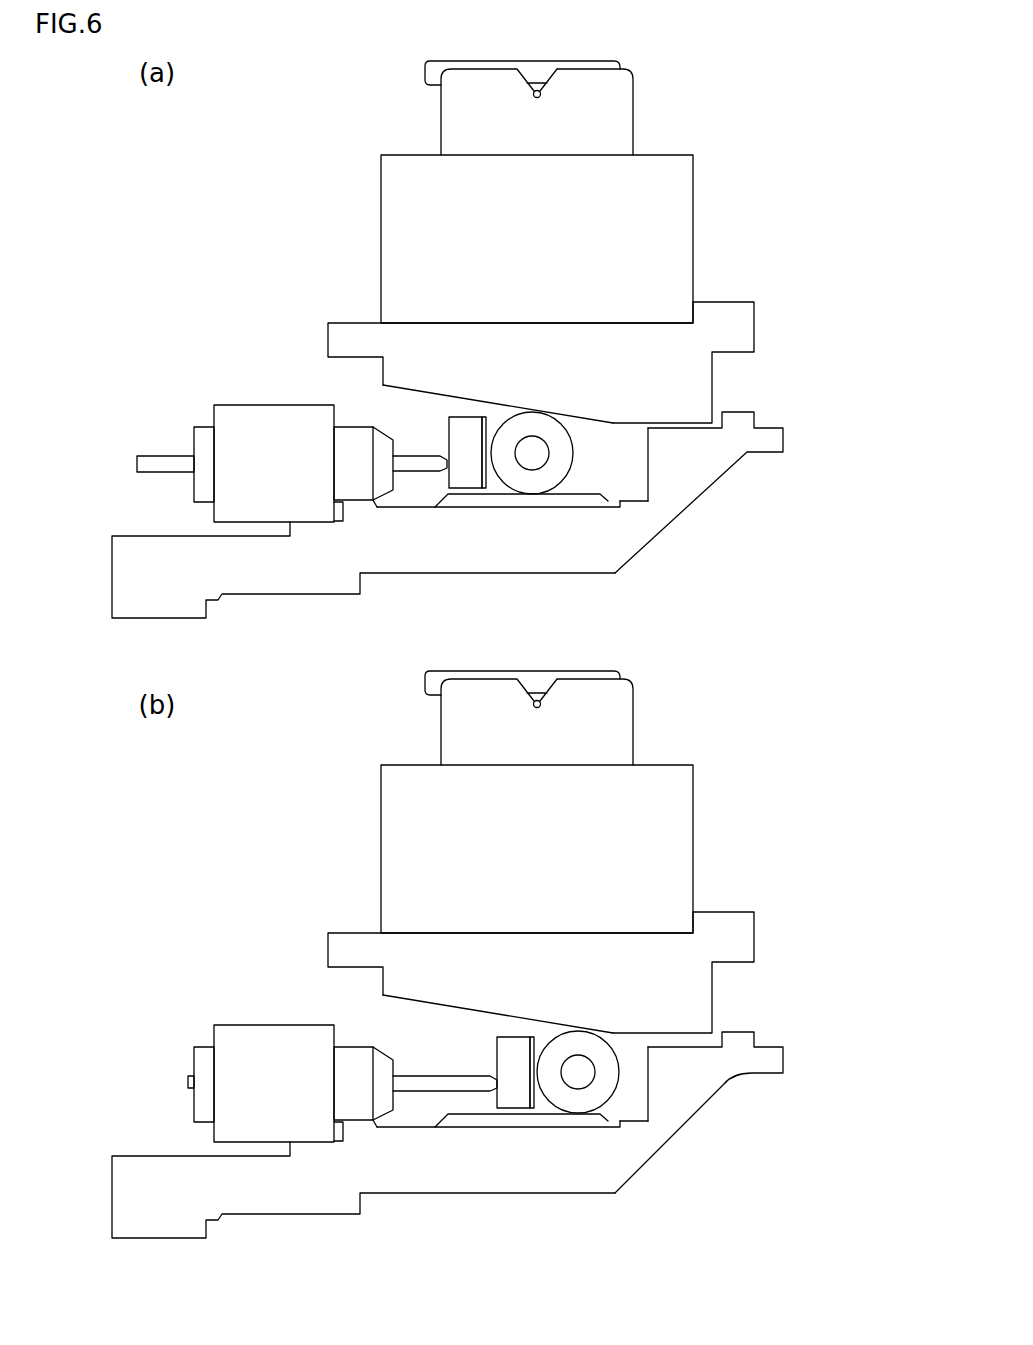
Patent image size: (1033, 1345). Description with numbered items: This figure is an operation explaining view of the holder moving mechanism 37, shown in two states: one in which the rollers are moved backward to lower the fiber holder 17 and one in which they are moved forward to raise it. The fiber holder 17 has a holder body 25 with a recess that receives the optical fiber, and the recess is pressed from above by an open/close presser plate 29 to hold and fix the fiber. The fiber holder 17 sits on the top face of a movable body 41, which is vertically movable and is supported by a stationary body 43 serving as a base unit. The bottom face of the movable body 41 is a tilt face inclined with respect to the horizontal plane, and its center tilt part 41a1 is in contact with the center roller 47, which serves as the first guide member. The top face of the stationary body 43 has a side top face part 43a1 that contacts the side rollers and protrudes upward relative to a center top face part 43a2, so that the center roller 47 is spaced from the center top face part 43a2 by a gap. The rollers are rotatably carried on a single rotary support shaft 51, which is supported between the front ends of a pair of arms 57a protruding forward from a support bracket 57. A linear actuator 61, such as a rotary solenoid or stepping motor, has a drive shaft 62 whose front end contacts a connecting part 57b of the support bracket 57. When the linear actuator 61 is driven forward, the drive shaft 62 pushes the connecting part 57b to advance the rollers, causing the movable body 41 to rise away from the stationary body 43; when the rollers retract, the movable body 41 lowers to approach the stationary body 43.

The fiber holder 17 is at (312, 47).
The holder body 25 is at (453, 125).
The open/close presser plate 29 is at (424, 73).
The holder moving mechanism 37 is at (755, 312).
The movable body 41 is at (737, 330).
The center tilt part 41a1 is at (582, 418).
The stationary body 43 is at (713, 448).
The side top face part 43a1 is at (576, 494).
The center top face part 43a2 is at (517, 504).
The center roller 47 is at (573, 468).
The rotary support shaft 51 is at (532, 455).
The support bracket 57 is at (472, 488).
The arm 57a is at (491, 482).
The connecting part 57b is at (445, 478).
The linear actuator 61 is at (258, 405).
The drive shaft 62 is at (417, 455).